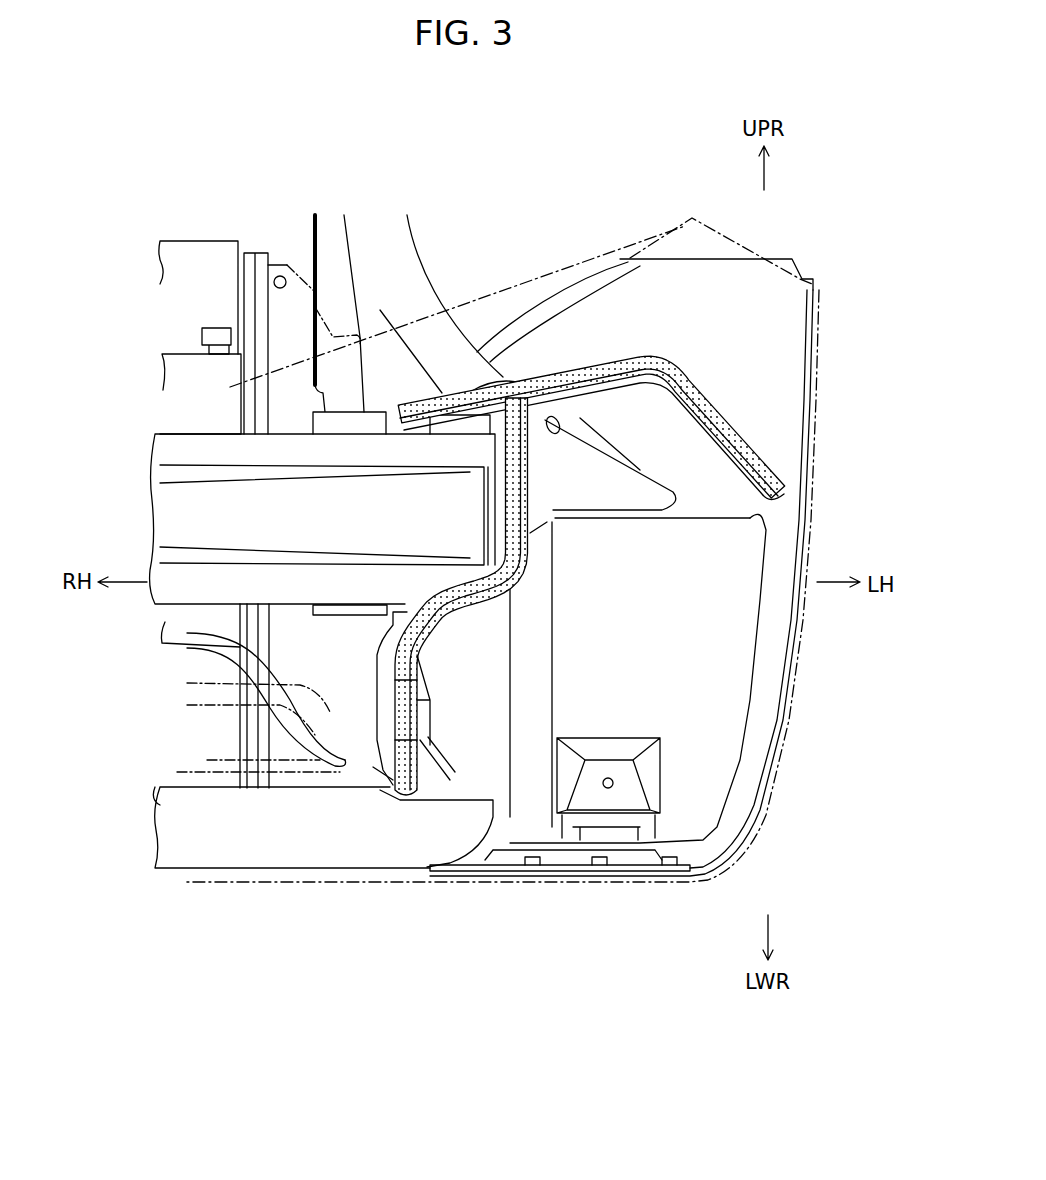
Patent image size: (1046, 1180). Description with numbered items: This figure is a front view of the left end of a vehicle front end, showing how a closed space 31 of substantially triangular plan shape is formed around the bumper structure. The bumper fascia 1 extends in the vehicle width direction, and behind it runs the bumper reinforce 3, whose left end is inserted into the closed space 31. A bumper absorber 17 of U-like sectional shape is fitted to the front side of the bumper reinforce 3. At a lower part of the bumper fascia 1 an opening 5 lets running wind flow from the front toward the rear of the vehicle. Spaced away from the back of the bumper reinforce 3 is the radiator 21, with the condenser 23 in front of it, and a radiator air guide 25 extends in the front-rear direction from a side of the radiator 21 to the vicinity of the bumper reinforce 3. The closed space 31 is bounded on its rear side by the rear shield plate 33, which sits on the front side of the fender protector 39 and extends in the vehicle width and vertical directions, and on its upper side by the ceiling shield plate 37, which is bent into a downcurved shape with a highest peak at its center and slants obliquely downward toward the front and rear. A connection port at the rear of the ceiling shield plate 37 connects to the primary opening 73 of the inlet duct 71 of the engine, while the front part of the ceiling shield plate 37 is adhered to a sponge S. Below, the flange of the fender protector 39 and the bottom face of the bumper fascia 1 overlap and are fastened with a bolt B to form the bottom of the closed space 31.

The bumper fascia 1 is at (800, 637).
The bumper reinforce 3 is at (160, 452).
The opening 5 is at (210, 763).
The bumper absorber 17 is at (160, 512).
The radiator 21 is at (195, 260).
The condenser 23 is at (162, 365).
The radiator air guide 25 is at (258, 260).
The closed space 31 is at (729, 484).
The rear shield plate 33 is at (665, 636).
The ceiling shield plate 37 is at (673, 427).
The fender protector 39 is at (797, 331).
The inlet duct 71 is at (383, 247).
The primary opening 73 is at (540, 410).
The sponge S is at (790, 497).
The bolt B is at (543, 862).